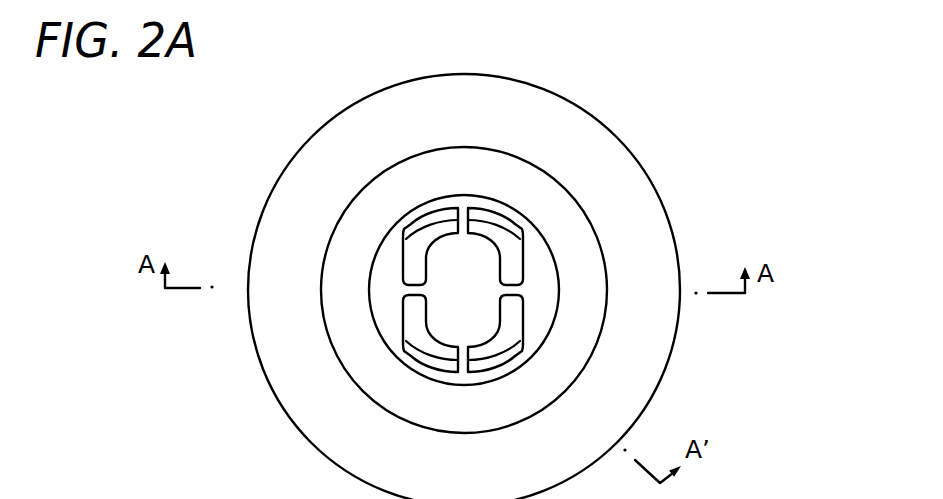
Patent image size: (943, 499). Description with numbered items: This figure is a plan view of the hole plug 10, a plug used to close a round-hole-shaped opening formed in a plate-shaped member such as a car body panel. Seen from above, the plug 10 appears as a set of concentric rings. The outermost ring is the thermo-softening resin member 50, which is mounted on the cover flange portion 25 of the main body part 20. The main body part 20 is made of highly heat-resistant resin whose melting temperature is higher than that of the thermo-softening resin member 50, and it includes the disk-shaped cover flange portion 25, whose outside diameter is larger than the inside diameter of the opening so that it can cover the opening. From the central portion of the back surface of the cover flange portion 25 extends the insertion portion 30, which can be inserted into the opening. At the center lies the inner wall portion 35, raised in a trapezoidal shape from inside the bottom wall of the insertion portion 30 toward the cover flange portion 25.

The hole plug 10 is at (721, 122).
The main body part 20 is at (603, 237).
The cover flange portion 25 is at (522, 176).
The insertion portion 30 is at (394, 260).
The inner wall portion 35 is at (463, 275).
The thermo-softening resin member 50 is at (683, 243).